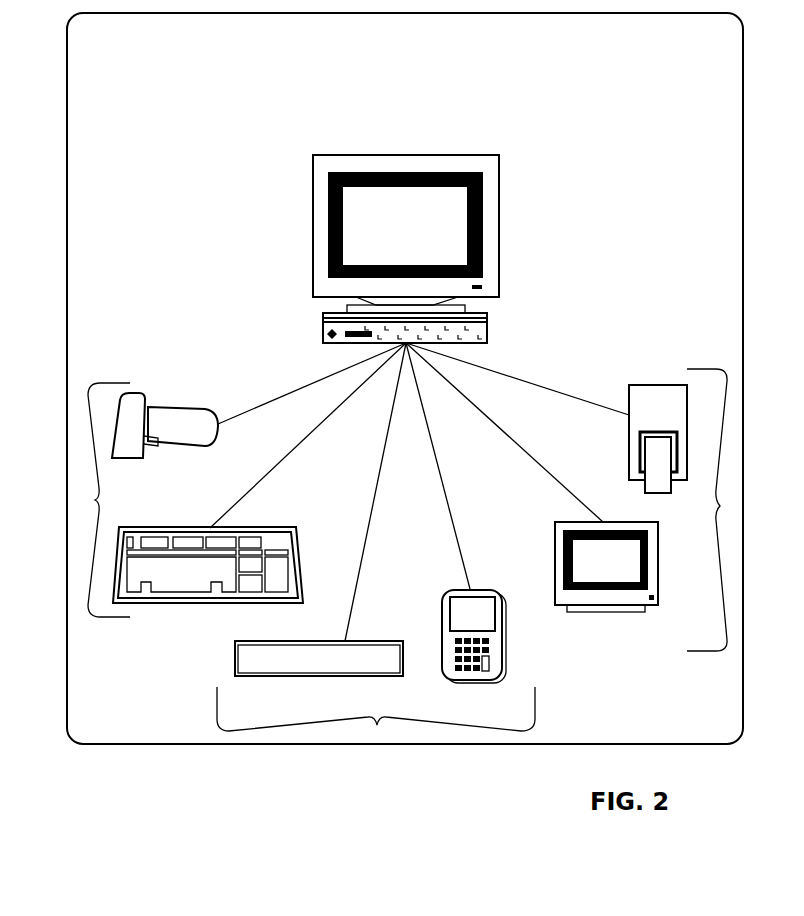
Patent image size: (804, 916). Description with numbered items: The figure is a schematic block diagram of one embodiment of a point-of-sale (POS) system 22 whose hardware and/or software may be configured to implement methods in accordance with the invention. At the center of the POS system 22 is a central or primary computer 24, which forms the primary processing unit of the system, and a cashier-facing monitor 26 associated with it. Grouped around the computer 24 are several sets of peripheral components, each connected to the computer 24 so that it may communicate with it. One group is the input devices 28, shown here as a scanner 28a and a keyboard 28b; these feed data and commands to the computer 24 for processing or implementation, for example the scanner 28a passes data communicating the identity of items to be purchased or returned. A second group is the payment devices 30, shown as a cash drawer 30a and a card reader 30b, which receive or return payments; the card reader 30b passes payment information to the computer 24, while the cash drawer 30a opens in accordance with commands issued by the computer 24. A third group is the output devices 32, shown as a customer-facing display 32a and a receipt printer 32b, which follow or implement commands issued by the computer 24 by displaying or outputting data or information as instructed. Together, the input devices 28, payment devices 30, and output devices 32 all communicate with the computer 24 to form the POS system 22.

The point-of-sale (POS) system 22 is at (577, 81).
The computer 24 is at (510, 310).
The monitor 26 is at (292, 192).
The input devices 28 is at (96, 500).
The scanner 28a is at (180, 425).
The keyboard 28b is at (274, 538).
The payment devices 30 is at (377, 725).
The cash drawer 30a is at (320, 660).
The card reader 30b is at (465, 594).
The output devices 32 is at (720, 506).
The customer-facing display 32a is at (603, 575).
The receipt printer 32b is at (648, 407).